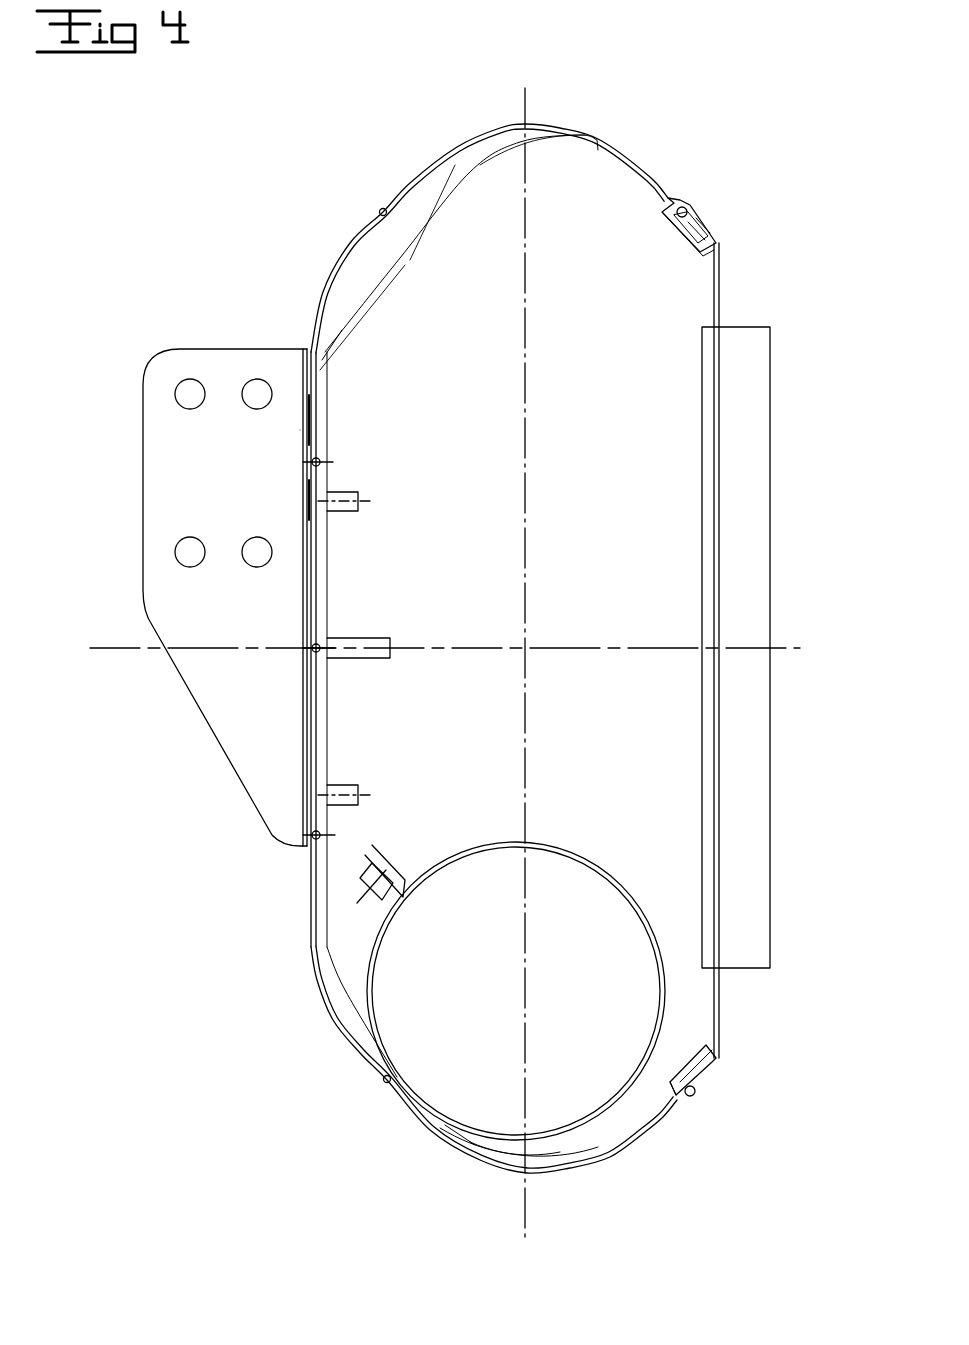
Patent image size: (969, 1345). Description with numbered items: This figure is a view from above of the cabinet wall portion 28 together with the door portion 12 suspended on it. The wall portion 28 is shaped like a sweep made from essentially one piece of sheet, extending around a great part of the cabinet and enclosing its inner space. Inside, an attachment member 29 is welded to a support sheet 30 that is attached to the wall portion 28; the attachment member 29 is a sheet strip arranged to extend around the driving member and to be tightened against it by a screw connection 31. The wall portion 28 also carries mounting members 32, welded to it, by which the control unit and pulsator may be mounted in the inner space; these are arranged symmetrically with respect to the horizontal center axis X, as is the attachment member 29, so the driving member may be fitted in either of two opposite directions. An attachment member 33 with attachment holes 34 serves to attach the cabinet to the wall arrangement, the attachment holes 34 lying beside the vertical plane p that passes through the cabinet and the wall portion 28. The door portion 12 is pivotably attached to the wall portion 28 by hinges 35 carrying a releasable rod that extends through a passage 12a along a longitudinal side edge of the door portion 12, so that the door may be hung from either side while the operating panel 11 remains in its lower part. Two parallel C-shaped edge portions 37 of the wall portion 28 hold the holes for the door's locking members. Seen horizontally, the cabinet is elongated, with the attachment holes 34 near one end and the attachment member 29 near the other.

The operating panel 11 is at (765, 355).
The door portion 12 is at (717, 520).
The passage 12a is at (695, 1097).
The wall portion 28 is at (313, 300).
The attachment member 29 is at (607, 877).
The support sheet 30 is at (358, 253).
The screw connection 31 is at (412, 858).
The mounting member 32 is at (360, 785).
The attachment member 33 is at (160, 497).
The attachment hole 34 is at (257, 548).
The hinge 35 is at (693, 215).
The C-shaped edge portion 37 is at (700, 240).
The horizontal center axis X is at (527, 323).
The vertical plane p is at (727, 648).